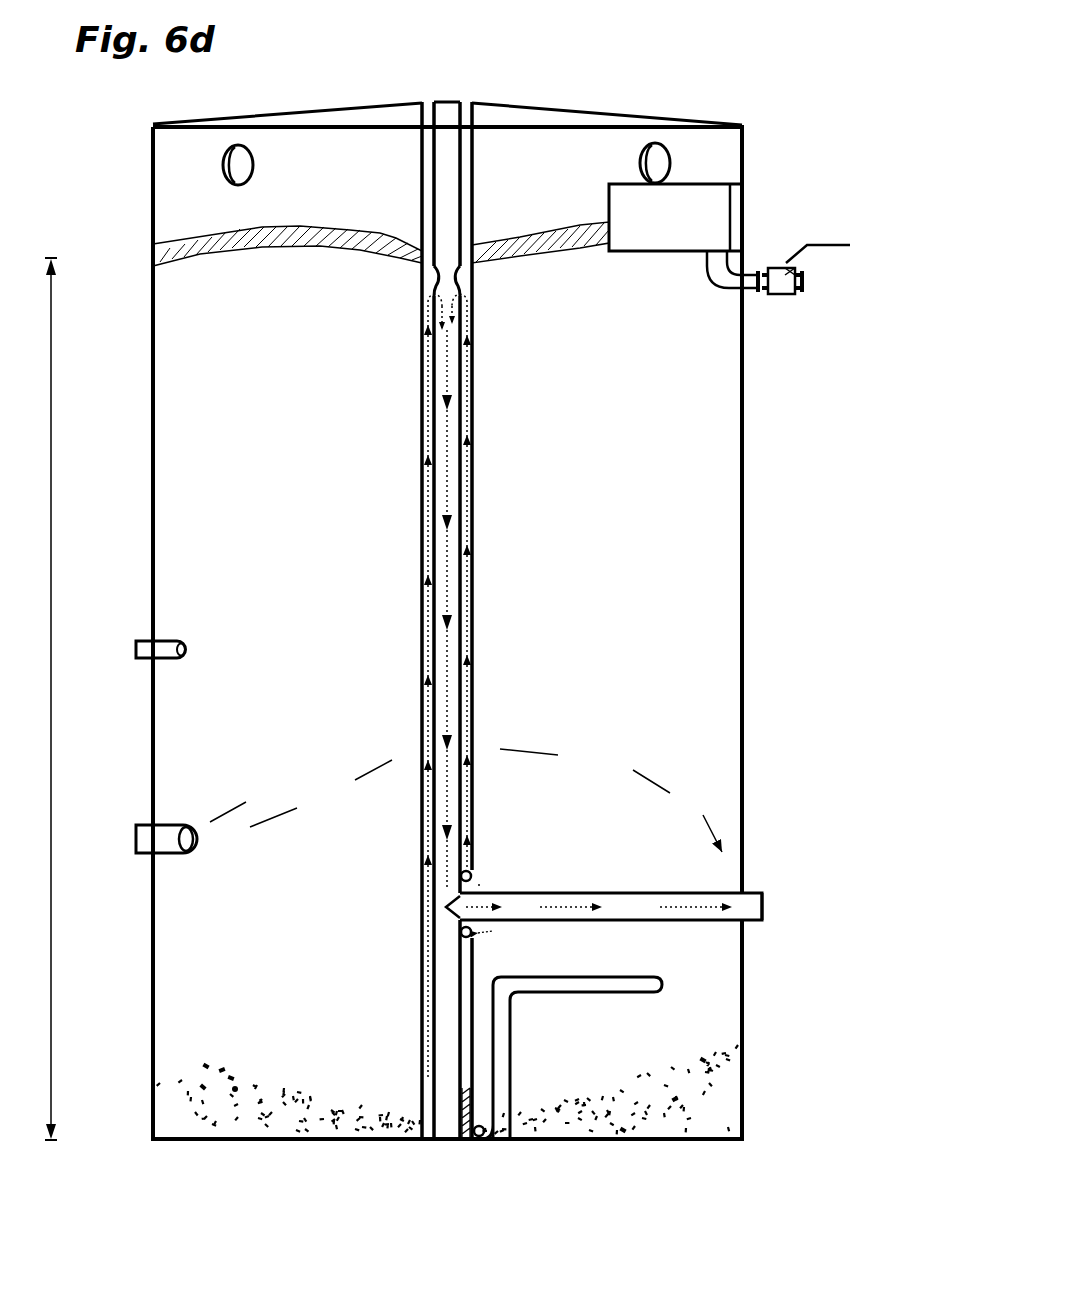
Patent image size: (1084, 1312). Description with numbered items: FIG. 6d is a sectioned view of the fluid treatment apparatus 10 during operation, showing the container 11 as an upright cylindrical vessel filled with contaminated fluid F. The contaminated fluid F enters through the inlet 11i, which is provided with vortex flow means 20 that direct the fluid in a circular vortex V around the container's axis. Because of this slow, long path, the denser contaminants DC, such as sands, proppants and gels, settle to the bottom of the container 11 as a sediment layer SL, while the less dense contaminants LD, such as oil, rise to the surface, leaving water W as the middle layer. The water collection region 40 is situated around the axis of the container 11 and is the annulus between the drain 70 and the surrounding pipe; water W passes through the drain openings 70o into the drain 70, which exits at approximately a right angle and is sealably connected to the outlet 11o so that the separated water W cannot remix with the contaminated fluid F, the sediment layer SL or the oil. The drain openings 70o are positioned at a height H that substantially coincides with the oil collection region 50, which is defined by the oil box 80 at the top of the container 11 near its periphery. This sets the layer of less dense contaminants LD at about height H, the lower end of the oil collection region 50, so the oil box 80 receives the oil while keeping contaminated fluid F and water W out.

The fluid treatment apparatus 10 is at (494, 585).
The container 11 is at (742, 80).
The vortex flow means 20 is at (194, 505).
The water collection region 40 is at (428, 112).
The drain 70 is at (604, 888).
The drain openings 70o is at (421, 292).
The oil collection region 50 is at (729, 204).
The oil box 80 is at (706, 207).
The inlet 11i is at (137, 812).
The outlet 11o is at (770, 897).
The less dense contaminants LD is at (238, 238).
The water W is at (421, 306).
The contaminated fluid F is at (466, 796).
The vortex V is at (466, 796).
The denser contaminants DC is at (404, 1055).
The sediment layer SL is at (205, 1069).
The height H is at (50, 303).